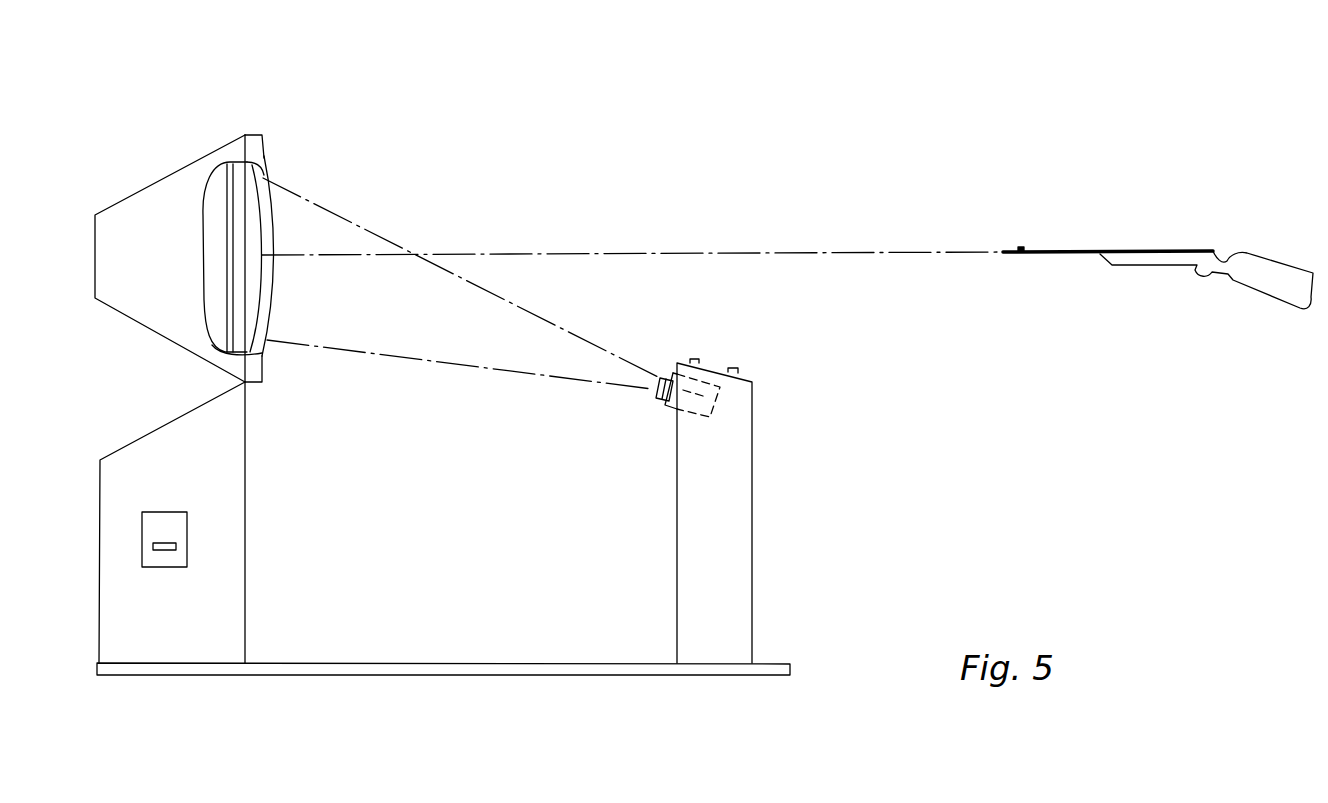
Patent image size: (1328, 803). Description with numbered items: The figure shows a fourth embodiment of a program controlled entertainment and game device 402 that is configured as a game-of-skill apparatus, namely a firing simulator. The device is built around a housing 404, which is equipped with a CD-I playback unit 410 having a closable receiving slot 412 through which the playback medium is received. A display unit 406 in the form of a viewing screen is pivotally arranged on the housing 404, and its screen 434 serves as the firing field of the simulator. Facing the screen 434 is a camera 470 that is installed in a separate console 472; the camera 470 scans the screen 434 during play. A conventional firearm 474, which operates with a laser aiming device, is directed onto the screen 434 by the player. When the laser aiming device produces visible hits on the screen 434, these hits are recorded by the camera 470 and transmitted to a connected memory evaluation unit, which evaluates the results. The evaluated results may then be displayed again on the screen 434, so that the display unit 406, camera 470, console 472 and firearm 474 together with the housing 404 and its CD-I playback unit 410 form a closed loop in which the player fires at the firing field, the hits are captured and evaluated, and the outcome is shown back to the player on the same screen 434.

The program controlled entertainment and game device 402 is at (566, 107).
The housing 404 is at (223, 592).
The display unit 406 is at (170, 172).
The CD-I playback unit 410 is at (177, 518).
The closable receiving slot 412 is at (176, 548).
The screen 434 is at (262, 232).
The camera 470 is at (668, 404).
The console 472 is at (723, 547).
The firearm 474 is at (1150, 260).